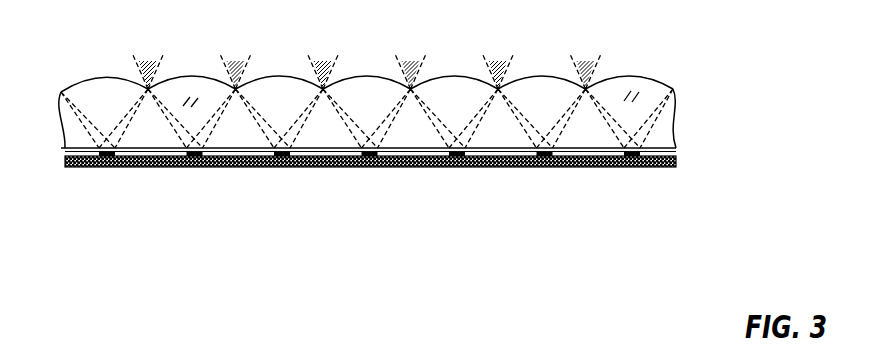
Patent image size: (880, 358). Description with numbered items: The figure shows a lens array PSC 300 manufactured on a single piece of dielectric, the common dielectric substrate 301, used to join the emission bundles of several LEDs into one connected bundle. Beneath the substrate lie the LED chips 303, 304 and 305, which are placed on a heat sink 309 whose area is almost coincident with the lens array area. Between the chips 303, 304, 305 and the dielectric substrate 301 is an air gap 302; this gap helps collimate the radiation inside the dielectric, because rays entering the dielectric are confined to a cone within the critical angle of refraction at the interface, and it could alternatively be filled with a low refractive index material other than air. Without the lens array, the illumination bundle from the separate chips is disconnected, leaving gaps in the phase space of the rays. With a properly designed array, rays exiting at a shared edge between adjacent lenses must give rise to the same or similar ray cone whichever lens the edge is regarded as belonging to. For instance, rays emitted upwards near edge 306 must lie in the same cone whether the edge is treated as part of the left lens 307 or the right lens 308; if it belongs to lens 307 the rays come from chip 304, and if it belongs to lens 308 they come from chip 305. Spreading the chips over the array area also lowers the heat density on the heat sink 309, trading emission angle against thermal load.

The lens array PSC 300 is at (369, 152).
The dielectric substrate 301 is at (366, 118).
The air gap 302 is at (89, 152).
The chip 303 is at (361, 158).
The chip 304 is at (113, 158).
The chip 305 is at (196, 158).
The edge 306 is at (148, 88).
The left lens 307 is at (87, 80).
The right lens 308 is at (202, 77).
The heat sink 309 is at (679, 159).